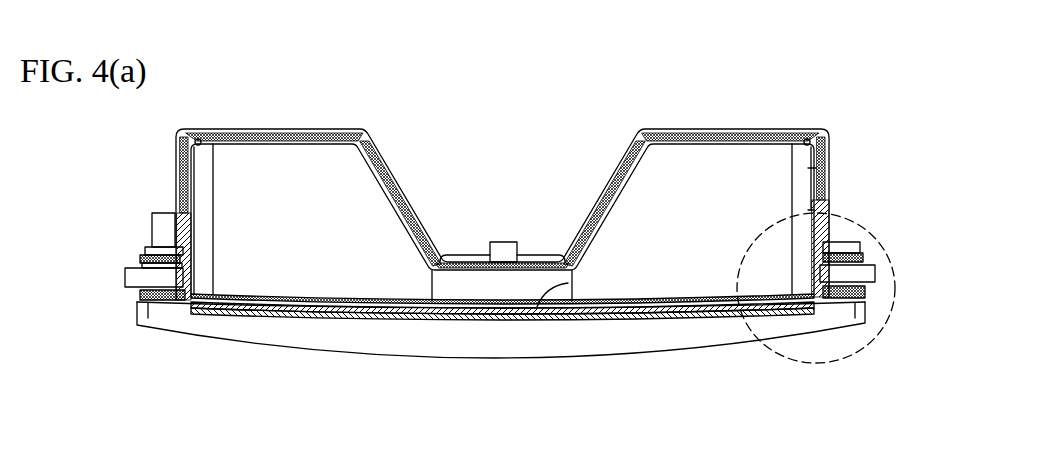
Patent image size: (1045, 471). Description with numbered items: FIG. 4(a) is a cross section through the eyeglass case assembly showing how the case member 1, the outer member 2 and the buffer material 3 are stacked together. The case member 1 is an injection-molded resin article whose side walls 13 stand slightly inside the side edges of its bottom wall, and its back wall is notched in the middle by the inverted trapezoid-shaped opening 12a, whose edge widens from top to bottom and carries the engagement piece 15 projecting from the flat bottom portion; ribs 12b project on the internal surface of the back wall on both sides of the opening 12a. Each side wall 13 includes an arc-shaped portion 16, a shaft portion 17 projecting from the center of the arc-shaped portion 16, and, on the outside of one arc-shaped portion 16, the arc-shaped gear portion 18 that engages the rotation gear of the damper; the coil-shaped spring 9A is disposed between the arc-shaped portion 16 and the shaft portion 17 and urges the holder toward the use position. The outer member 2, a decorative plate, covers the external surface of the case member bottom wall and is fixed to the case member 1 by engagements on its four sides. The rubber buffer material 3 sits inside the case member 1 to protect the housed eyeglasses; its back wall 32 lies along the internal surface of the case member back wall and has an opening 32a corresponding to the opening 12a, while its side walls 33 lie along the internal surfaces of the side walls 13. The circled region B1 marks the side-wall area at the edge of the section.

The case member 1 is at (410, 317).
The outer member 2 is at (700, 313).
The buffer material 3 is at (612, 311).
The coil-shaped spring 9A is at (140, 296).
The opening 12a is at (400, 191).
The rib 12b is at (306, 150).
The side wall 13 is at (176, 190).
The engagement piece 15 is at (505, 243).
The arc-shaped portion 16 is at (147, 250).
The shaft portion 17 is at (128, 270).
The arc-shaped gear portion 18 is at (155, 213).
The back wall 32 is at (297, 288).
The opening 32a is at (543, 305).
The side wall 33 is at (226, 288).
The enlarged region B1 is at (872, 232).